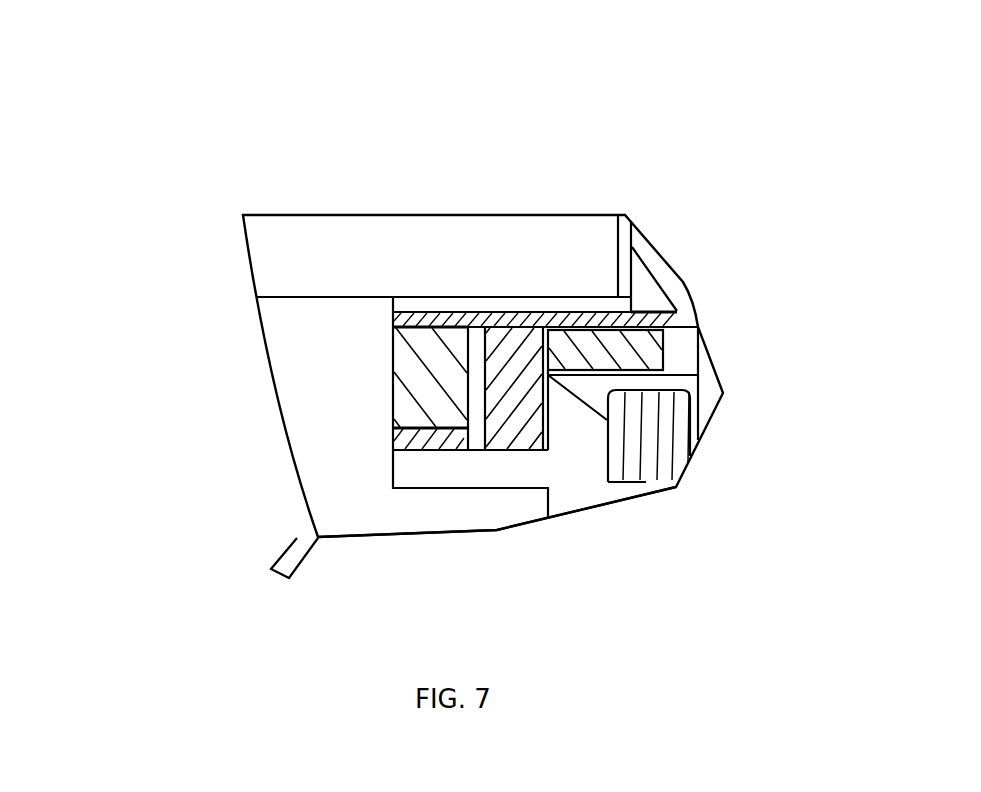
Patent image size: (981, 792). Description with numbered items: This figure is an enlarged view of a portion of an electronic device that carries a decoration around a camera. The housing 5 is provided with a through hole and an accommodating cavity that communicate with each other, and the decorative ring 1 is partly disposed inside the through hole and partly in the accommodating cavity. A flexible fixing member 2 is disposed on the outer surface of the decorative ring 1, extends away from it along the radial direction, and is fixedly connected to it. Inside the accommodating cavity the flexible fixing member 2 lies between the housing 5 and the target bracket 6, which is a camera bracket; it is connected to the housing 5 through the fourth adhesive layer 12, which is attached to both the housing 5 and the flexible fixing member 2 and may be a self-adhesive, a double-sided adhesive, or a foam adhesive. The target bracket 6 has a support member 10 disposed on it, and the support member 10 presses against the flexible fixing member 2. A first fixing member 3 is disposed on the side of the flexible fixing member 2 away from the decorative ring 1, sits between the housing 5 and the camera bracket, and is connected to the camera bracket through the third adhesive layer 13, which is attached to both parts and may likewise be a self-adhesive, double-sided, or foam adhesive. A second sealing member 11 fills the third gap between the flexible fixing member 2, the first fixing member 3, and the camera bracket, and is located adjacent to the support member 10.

The decorative ring 1 is at (655, 270).
The flexible fixing member 2 is at (578, 305).
The first fixing member 3 is at (432, 370).
The housing 5 is at (495, 240).
The target bracket 6 is at (475, 463).
The support member 10 is at (632, 352).
The second sealing member 11 is at (512, 398).
The fourth adhesive layer 12 is at (443, 305).
The third adhesive layer 13 is at (390, 452).